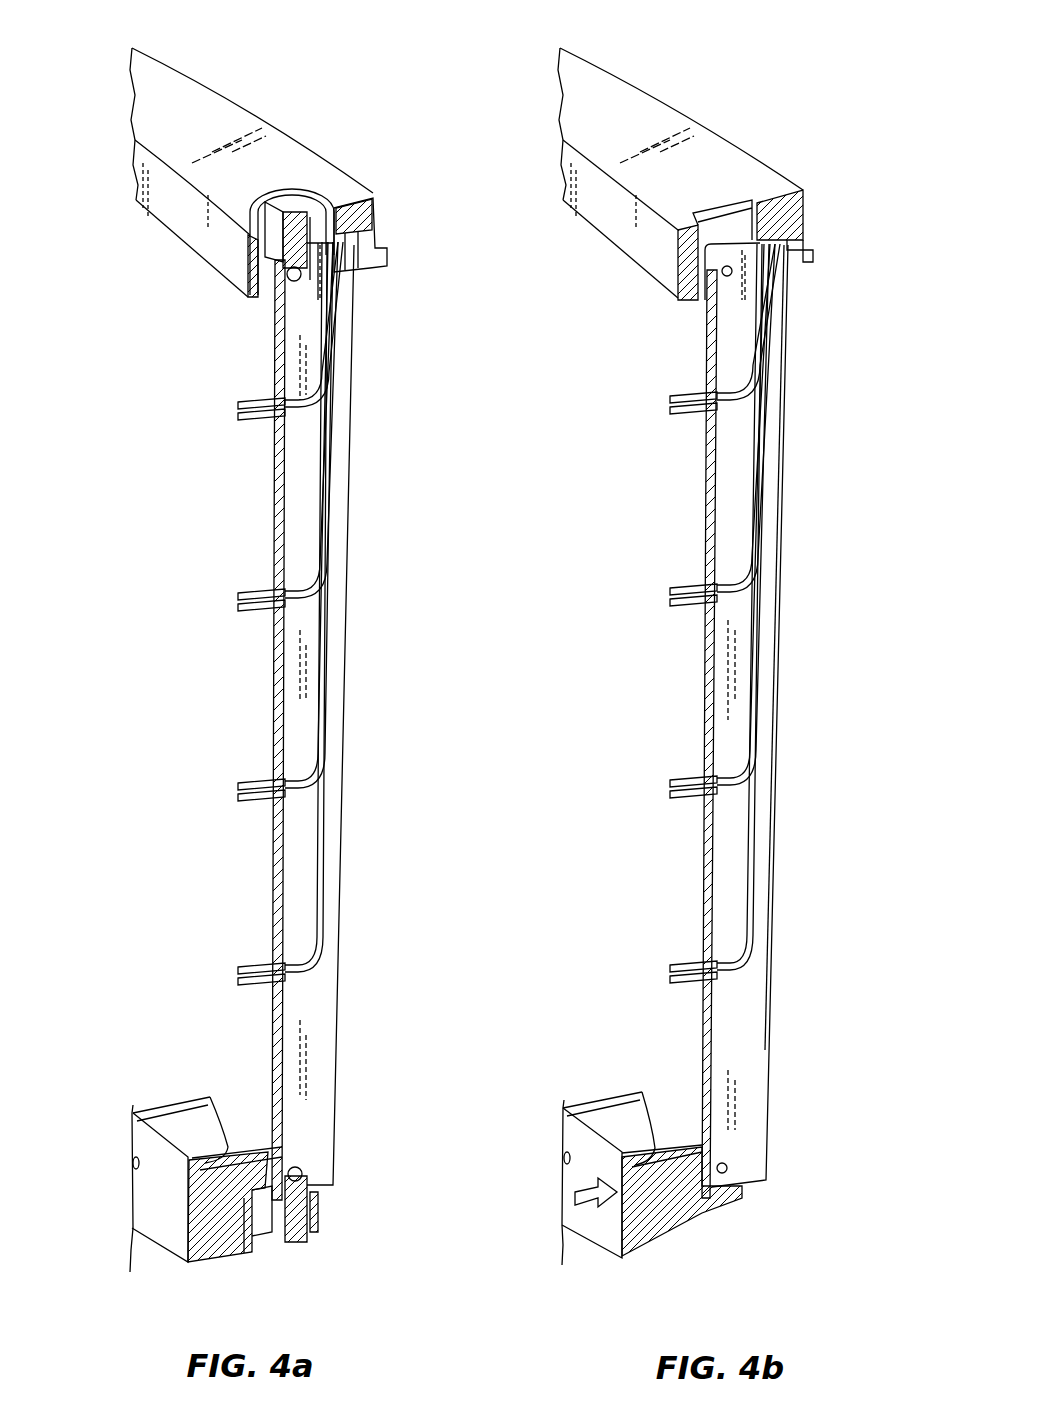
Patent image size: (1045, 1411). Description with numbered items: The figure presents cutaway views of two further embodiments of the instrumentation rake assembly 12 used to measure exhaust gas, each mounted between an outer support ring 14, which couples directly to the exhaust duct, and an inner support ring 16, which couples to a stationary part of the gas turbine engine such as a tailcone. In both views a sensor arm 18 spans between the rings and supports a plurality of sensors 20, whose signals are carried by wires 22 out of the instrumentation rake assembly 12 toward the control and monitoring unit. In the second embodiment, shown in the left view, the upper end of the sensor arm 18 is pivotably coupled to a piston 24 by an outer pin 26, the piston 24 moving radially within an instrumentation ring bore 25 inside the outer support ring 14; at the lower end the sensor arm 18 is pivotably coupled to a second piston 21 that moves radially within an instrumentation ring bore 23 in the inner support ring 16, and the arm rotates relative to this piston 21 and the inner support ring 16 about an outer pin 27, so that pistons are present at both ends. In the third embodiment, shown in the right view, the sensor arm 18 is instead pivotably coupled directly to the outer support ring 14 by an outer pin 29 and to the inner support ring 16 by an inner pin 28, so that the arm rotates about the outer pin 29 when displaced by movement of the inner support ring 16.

In FIG. 4a, the instrumentation rake assembly 12 is at (366, 666).
In FIG. 4b, the instrumentation rake assembly 12 is at (781, 674).
In FIG. 4a, the outer support ring 14 is at (205, 100).
In FIG. 4b, the outer support ring 14 is at (638, 106).
In FIG. 4a, the inner support ring 16 is at (156, 1194).
In FIG. 4b, the inner support ring 16 is at (600, 1164).
In FIG. 4a, the sensor arm 18 is at (341, 828).
In FIG. 4b, the sensor arm 18 is at (765, 927).
In FIG. 4a, the sensors 20 is at (247, 591).
In FIG. 4b, the sensors 20 is at (677, 589).
In FIG. 4a, the piston 21 is at (299, 1247).
In FIG. 4a, the wires 22 is at (342, 523).
In FIG. 4b, the wires 22 is at (770, 493).
In FIG. 4a, the instrumentation ring bore 23 is at (203, 1258).
In FIG. 4a, the piston 24 is at (287, 196).
In FIG. 4a, the instrumentation ring bore 25 is at (373, 198).
In FIG. 4a, the outer pin 26 is at (304, 277).
In FIG. 4a, the outer pin 27 is at (304, 1171).
In FIG. 4b, the inner pin 28 is at (736, 1167).
In FIG. 4b, the outer pin 29 is at (724, 278).